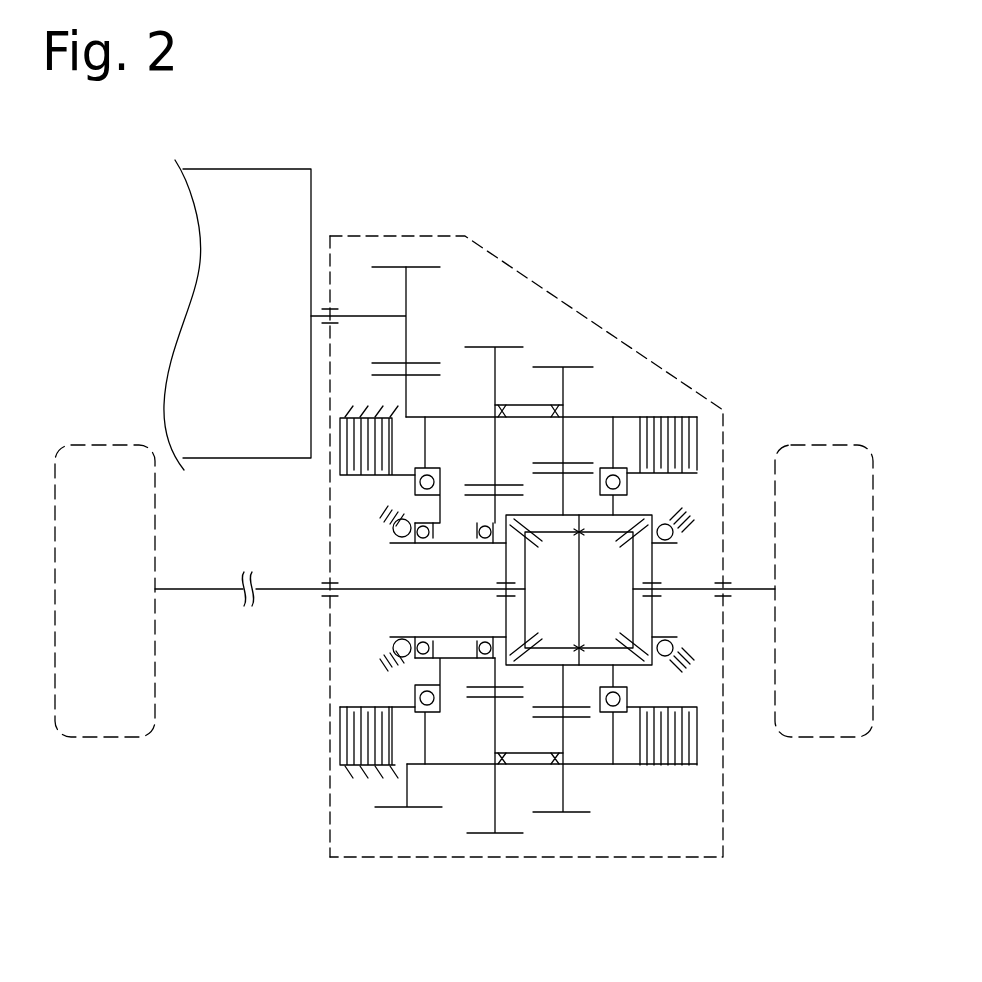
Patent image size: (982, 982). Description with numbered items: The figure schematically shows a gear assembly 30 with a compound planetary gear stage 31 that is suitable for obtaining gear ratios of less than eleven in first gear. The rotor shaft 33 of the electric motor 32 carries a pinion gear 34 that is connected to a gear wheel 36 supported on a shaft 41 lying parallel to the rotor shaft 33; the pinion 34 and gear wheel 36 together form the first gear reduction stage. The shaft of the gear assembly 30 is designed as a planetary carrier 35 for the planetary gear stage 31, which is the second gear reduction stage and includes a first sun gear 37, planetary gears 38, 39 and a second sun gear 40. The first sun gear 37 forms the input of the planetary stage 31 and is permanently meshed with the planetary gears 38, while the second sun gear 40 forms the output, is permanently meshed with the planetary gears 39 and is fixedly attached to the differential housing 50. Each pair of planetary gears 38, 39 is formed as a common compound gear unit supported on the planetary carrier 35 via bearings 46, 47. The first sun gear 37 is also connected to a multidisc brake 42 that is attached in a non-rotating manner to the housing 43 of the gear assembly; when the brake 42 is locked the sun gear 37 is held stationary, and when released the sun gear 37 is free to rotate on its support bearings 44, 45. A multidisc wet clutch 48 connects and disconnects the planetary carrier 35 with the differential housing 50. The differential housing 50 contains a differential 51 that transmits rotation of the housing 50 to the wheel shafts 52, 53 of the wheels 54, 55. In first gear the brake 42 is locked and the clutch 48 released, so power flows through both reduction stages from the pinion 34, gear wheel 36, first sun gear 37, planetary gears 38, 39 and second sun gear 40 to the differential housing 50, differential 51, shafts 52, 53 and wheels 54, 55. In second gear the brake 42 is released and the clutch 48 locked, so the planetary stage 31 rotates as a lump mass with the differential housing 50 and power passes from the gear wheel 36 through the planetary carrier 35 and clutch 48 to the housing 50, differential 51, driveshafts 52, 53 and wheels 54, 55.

The gear assembly 30 is at (680, 237).
The compound planetary gear stage 31 is at (538, 336).
The electric motor 32 is at (252, 182).
The rotor shaft 33 is at (360, 312).
The pinion gear 34 is at (425, 263).
The planetary carrier 35 is at (597, 416).
The gear wheel 36 is at (432, 377).
The first sun gear 37 is at (466, 494).
The planetary gears 38 is at (465, 347).
The planetary gears 39 is at (583, 367).
The second sun gear 40 is at (538, 476).
The shaft 41 is at (334, 528).
The multidisc brake 42 is at (340, 469).
The housing 43 is at (331, 356).
The support bearing 44 is at (420, 545).
The support bearing 45 is at (483, 545).
The bearing 46 is at (500, 416).
The bearing 47 is at (557, 416).
The multidisc wet clutch 48 is at (675, 418).
The differential housing 50 is at (654, 554).
The differential 51 is at (612, 628).
The wheel shaft 52 is at (684, 592).
The wheel shaft 53 is at (280, 592).
The wheel 54 is at (100, 448).
The wheel 55 is at (833, 448).